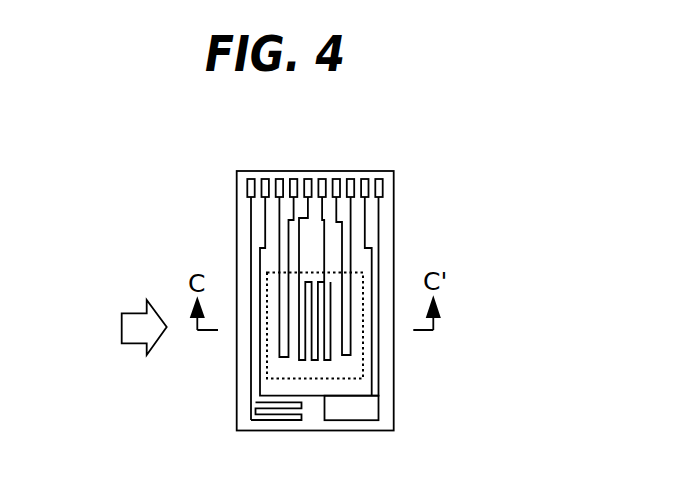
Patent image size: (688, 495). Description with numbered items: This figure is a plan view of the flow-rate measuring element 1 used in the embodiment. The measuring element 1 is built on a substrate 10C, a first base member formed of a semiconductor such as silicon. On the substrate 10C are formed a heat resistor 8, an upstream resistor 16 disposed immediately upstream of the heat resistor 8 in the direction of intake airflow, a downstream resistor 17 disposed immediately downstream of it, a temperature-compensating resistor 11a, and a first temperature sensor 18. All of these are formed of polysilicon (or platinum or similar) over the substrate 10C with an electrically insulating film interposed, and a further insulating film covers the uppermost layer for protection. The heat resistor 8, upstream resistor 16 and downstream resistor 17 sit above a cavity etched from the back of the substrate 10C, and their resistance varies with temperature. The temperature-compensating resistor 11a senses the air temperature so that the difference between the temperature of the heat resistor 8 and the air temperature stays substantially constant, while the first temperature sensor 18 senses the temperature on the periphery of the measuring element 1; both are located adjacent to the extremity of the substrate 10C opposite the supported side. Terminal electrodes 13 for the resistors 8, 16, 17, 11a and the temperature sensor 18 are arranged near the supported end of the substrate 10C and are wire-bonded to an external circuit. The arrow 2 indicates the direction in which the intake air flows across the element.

The measuring element 1 is at (394, 348).
The insertion direction arrow 2 is at (122, 327).
The heat resistor 8 is at (309, 333).
The substrate 10C is at (370, 301).
The temperature-compensating resistor 11a is at (252, 410).
The terminal electrodes 13 is at (385, 173).
The upstream resistor 16 is at (272, 276).
The downstream resistor 17 is at (342, 268).
The first temperature sensor 18 is at (355, 415).